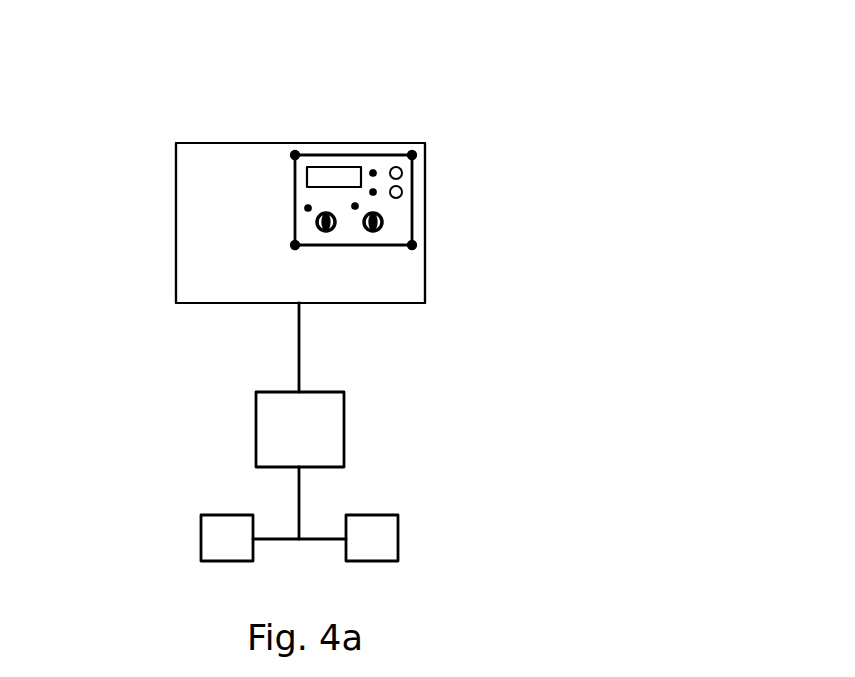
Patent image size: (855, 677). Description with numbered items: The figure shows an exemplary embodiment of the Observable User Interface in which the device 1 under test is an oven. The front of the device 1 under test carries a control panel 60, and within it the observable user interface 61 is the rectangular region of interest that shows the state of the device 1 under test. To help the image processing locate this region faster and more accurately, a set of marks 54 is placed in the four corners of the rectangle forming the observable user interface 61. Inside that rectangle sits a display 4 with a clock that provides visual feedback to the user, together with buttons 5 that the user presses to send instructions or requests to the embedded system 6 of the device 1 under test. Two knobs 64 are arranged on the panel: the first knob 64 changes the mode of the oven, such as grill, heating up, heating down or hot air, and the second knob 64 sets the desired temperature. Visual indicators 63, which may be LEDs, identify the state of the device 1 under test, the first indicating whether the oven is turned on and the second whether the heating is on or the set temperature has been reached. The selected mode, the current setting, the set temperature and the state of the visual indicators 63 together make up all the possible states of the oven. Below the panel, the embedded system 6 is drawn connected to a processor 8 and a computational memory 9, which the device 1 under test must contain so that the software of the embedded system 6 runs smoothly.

The device under test 1 is at (176, 303).
The display 4 is at (333, 167).
The button 5 is at (402, 192).
The embedded system 6 is at (346, 418).
The processor 8 is at (201, 535).
The computational memory 9 is at (387, 512).
The marks 54 is at (295, 155).
The control panel 60 is at (195, 185).
The observable user interface 61 is at (295, 177).
The visual indicator 63 is at (373, 173).
The knob 64 is at (316, 222).